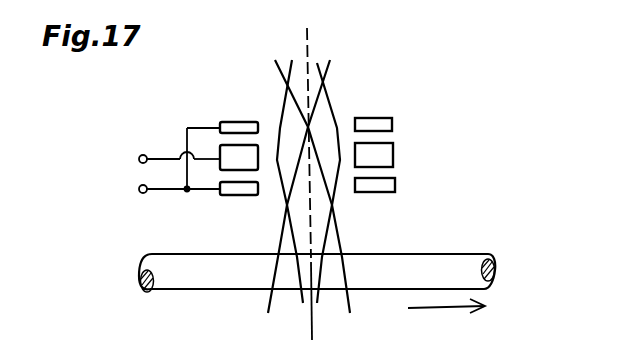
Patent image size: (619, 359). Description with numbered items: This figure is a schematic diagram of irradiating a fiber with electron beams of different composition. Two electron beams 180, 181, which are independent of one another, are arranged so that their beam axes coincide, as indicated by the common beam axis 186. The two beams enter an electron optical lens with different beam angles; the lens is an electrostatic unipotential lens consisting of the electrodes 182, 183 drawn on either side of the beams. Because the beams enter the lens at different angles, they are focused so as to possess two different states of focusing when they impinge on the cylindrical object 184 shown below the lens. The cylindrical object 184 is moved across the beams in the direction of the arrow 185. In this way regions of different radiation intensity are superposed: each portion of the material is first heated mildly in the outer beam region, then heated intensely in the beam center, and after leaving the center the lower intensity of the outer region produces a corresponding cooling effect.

The electron beam 180 is at (318, 63).
The electron beam 181 is at (332, 68).
The electrode 182 is at (393, 157).
The electrode 183 is at (393, 129).
The cylindrical object 184 is at (435, 254).
The arrow 185 is at (423, 311).
The beam axis 186 is at (309, 38).